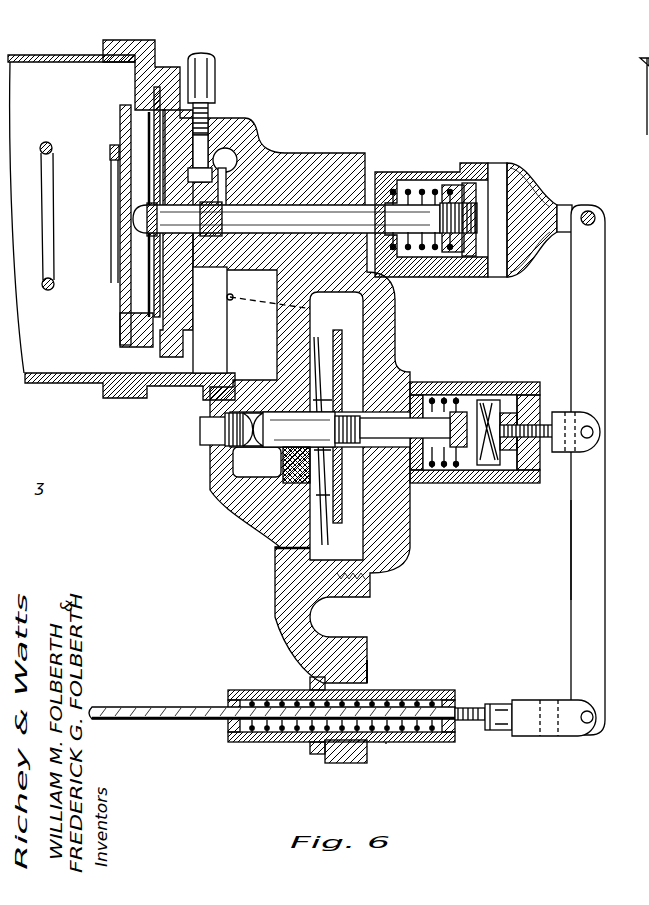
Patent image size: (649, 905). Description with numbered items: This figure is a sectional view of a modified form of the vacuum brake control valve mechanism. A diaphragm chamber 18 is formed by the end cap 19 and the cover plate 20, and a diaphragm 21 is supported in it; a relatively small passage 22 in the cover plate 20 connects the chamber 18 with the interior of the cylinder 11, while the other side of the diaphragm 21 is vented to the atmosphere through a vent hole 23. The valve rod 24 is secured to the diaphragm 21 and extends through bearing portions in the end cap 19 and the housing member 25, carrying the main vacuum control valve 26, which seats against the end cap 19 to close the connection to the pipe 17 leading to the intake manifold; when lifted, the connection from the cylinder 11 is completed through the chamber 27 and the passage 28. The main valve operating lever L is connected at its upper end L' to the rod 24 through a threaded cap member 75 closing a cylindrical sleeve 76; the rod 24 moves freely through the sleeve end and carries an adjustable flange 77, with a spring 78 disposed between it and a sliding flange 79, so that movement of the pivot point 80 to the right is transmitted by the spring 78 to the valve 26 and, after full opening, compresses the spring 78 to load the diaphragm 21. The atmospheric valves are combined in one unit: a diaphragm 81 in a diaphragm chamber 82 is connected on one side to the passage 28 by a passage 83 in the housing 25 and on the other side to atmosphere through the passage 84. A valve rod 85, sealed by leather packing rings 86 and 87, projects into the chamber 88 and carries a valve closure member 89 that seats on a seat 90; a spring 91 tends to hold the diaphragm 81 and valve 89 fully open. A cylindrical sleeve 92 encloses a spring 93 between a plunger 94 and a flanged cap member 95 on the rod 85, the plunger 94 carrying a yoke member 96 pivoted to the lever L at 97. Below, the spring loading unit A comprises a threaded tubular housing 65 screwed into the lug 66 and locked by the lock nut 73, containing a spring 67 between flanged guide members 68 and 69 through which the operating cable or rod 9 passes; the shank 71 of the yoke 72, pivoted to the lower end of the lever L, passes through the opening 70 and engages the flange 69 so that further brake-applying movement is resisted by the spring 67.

The operating cable or rod 9 is at (210, 720).
The cylinder 11 is at (56, 384).
The pipe 17 is at (215, 80).
The diaphragm chamber 18 is at (137, 298).
The end cap 19 is at (152, 56).
The cover plate 20 is at (120, 180).
The diaphragm 21 is at (149, 130).
The passage 22 is at (118, 250).
The vent hole 23 is at (145, 92).
The valve rod 24 is at (328, 204).
The housing member 25 is at (305, 200).
The main vacuum control valve 26 is at (280, 152).
The chamber 27 is at (232, 152).
The passage 28 is at (210, 320).
The tubular housing 65 is at (265, 690).
The lug 66 is at (366, 680).
The spring 67 is at (276, 735).
The flanged guide member 68 is at (233, 735).
The flanged guide member 69 is at (450, 738).
The opening 70 is at (458, 708).
The shank 71 is at (505, 706).
The yoke 72 is at (598, 713).
The lock nut 73 is at (316, 752).
The threaded cap member 75 is at (518, 255).
The cylindrical sleeve 76 is at (470, 262).
The adjustable flange 77 is at (455, 188).
The spring 78 is at (405, 190).
The flange 79 is at (392, 266).
The pivot point 80 is at (591, 210).
The diaphragm 81 is at (382, 300).
The diaphragm chamber 82 is at (368, 526).
The passage 83 is at (228, 296).
The passage 84 is at (275, 548).
The valve rod 85 is at (230, 500).
The packing ring 86 is at (430, 384).
The packing ring 87 is at (285, 470).
The passage way or chamber 88 is at (226, 412).
The valve closure member 89 is at (224, 430).
The seat 90 is at (213, 455).
The spring 91 is at (318, 520).
The cylindrical sleeve 92 is at (492, 482).
The spring 93 is at (455, 470).
The plunger 94 is at (526, 482).
The flanged cap member 95 is at (480, 398).
The yoke member 96 is at (562, 410).
The pivotal connection 97 is at (592, 430).
The main valve operating lever L is at (598, 550).
The upper end of lever L' is at (601, 470).
The spring loading unit A is at (414, 742).